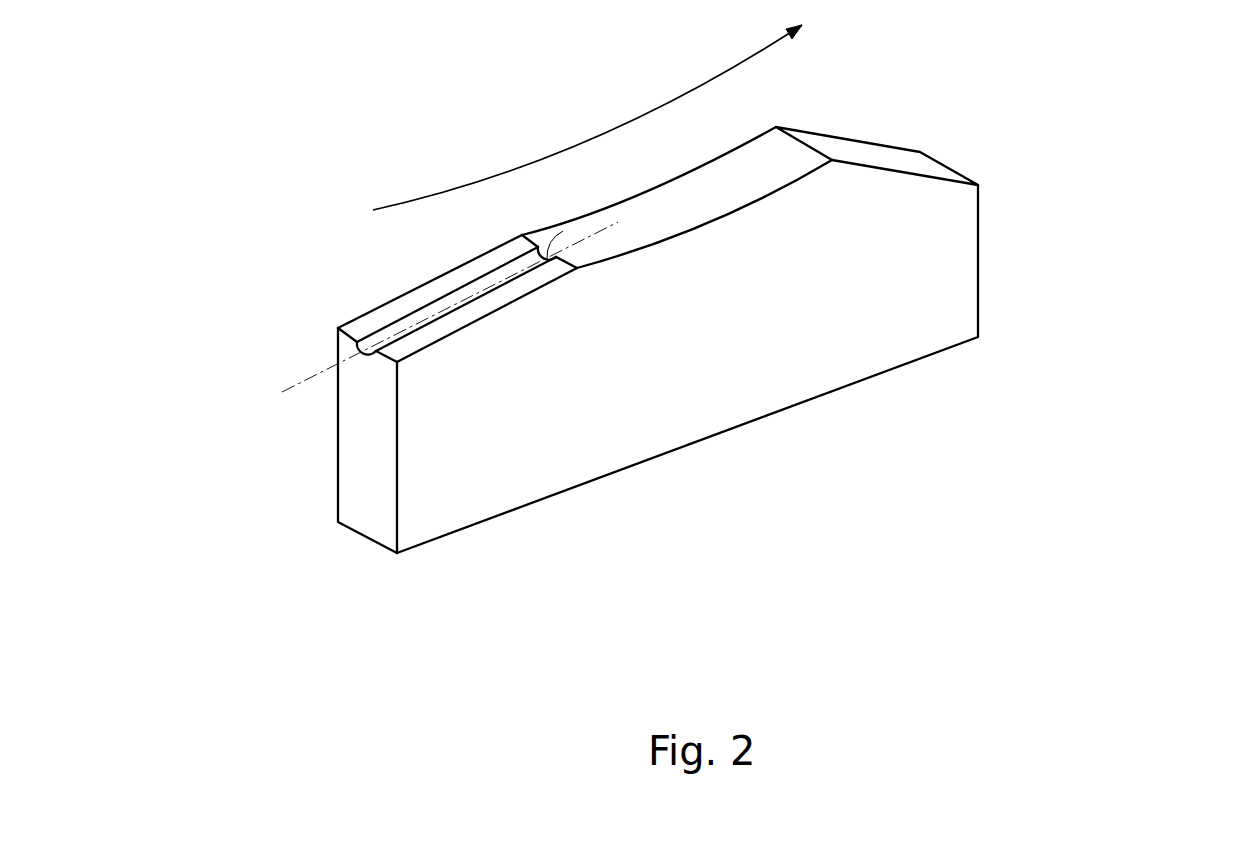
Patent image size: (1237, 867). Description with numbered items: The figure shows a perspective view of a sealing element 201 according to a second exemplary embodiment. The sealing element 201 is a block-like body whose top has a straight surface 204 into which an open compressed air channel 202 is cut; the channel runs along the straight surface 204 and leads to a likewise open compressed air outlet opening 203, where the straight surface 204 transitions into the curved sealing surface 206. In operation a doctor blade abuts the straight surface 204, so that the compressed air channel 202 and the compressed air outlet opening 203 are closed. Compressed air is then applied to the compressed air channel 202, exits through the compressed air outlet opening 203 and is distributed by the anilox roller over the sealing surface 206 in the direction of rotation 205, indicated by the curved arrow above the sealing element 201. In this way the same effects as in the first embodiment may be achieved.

The sealing element 201 is at (1012, 130).
The compressed air channel 202 is at (393, 332).
The compressed air outlet opening 203 is at (566, 235).
The straight surface 204 is at (403, 303).
The direction of rotation 205 is at (415, 188).
The sealing surface 206 is at (782, 163).